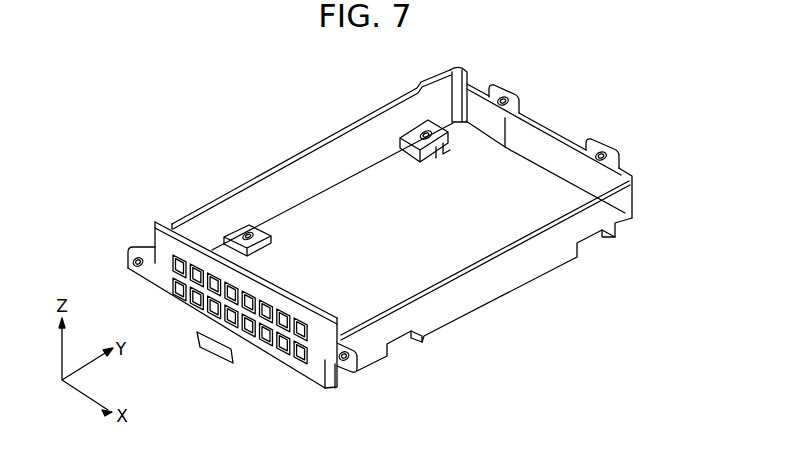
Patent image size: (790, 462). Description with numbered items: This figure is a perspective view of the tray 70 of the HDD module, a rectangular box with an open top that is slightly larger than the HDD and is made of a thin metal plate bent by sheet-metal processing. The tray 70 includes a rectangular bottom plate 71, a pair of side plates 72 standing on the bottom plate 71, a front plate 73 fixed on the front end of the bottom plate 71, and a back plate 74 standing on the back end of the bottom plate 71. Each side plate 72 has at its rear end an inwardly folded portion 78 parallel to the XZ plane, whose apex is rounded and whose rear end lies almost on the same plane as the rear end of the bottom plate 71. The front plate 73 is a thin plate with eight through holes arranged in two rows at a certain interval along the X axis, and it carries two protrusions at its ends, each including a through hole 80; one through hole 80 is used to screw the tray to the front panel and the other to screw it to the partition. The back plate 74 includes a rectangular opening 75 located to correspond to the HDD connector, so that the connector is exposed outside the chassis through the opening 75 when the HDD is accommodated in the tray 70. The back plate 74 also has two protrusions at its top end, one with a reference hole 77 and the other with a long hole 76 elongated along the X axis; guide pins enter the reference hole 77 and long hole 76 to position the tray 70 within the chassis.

The tray 70 is at (284, 159).
The bottom plate 71 is at (427, 268).
The side plates 72 is at (357, 143).
The front plate 73 is at (160, 242).
The back plate 74 is at (482, 104).
The opening 75 is at (550, 146).
The long hole 76 is at (605, 144).
The reference hole 77 is at (500, 88).
The folded portion 78 is at (457, 96).
The through hole 80 is at (128, 260).